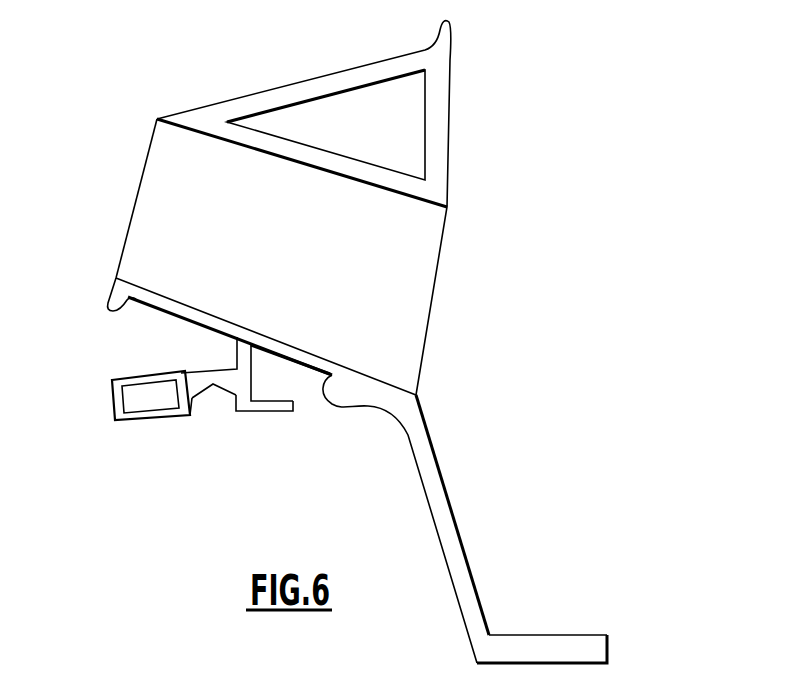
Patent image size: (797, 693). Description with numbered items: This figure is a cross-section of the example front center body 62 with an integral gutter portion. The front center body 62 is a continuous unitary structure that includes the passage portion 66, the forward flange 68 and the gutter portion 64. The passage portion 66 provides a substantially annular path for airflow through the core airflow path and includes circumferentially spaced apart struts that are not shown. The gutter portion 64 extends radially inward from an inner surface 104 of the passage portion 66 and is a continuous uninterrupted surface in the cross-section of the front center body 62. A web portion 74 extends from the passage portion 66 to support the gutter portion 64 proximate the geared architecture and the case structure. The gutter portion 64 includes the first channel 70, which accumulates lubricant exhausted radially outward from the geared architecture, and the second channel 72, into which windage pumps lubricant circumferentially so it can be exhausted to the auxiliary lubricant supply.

The front center body 62 is at (600, 119).
The passage portion 66 is at (304, 257).
The forward flange 68 is at (100, 291).
The inner surface 104 is at (212, 342).
The gutter portion 64 is at (203, 371).
The first channel 70 is at (215, 410).
The second channel 72 is at (138, 398).
The web portion 74 is at (243, 362).